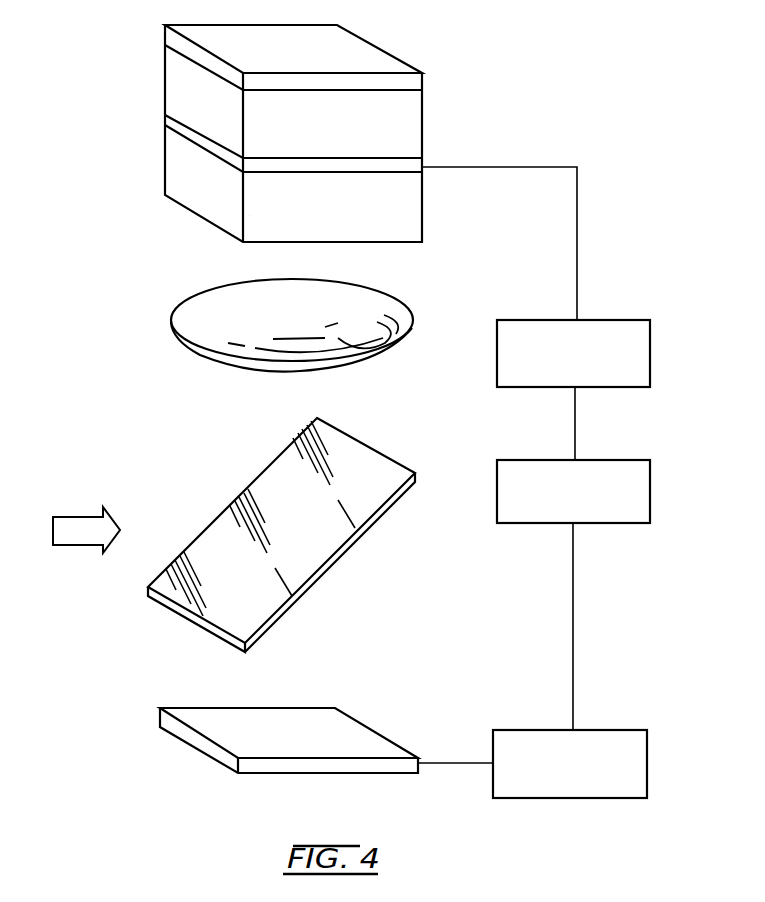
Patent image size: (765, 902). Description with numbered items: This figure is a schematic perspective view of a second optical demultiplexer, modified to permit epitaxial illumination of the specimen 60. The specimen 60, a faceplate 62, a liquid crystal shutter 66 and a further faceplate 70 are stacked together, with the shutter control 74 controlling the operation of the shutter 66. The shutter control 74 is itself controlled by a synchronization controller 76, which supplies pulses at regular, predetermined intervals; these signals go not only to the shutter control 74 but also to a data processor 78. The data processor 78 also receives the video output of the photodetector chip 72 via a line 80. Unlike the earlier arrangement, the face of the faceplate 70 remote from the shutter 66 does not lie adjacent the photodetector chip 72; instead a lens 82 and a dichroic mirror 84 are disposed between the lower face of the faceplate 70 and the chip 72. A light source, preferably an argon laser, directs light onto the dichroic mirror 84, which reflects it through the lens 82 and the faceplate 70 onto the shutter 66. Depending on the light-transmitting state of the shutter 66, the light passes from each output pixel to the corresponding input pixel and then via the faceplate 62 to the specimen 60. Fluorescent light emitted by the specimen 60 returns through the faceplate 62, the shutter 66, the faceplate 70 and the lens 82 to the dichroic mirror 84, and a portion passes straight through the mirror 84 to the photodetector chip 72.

The specimen 60 is at (368, 58).
The faceplate 62 is at (403, 117).
The liquid crystal shutter 66 is at (410, 163).
The faceplate 70 is at (412, 216).
The photodetector chip 72 is at (362, 738).
The shutter control 74 is at (613, 318).
The synchronization controller 76 is at (613, 458).
The data processor 78 is at (602, 727).
The line 80 is at (447, 763).
The lens 82 is at (378, 308).
The dichroic mirror 84 is at (303, 565).